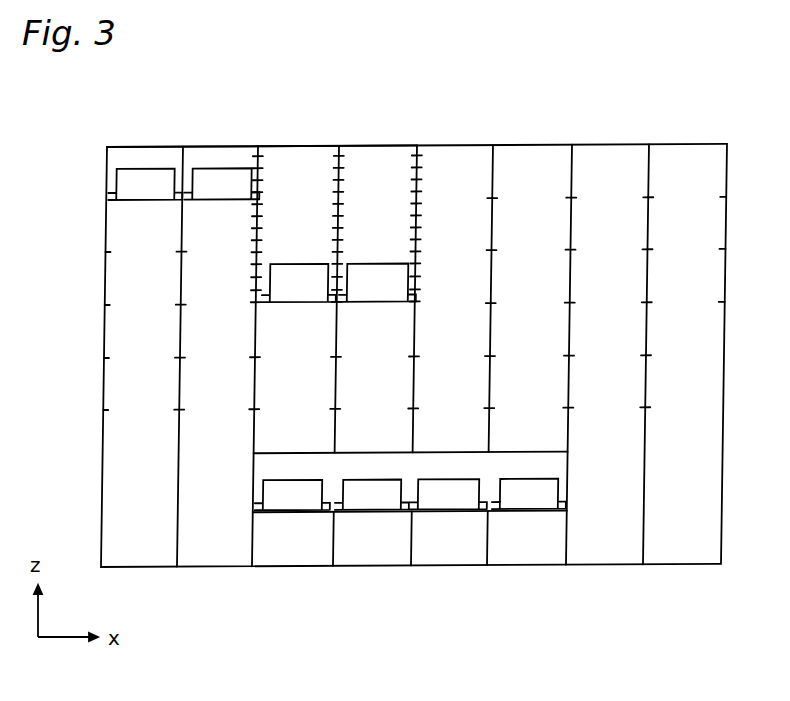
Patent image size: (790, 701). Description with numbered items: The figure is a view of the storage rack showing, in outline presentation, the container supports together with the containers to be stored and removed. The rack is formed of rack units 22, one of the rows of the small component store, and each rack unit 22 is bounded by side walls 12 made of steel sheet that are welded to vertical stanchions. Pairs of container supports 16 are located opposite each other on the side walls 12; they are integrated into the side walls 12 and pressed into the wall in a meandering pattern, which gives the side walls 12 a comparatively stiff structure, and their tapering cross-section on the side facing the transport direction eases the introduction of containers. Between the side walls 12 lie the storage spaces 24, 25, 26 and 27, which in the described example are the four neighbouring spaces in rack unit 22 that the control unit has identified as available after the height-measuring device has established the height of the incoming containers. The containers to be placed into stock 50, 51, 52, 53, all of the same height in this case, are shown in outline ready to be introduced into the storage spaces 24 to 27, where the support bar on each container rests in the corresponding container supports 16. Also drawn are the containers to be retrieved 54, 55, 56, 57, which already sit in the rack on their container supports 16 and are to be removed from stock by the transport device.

The side wall 12 is at (493, 172).
The container support 16 is at (408, 168).
The rack unit 22 is at (172, 157).
The storage space 24 is at (144, 194).
The storage space 25 is at (220, 193).
The storage space 26 is at (298, 193).
The storage space 27 is at (377, 191).
The container to be placed into stock 50 is at (292, 495).
The container to be placed into stock 51 is at (372, 494).
The container to be placed into stock 52 is at (448, 494).
The container to be placed into stock 53 is at (529, 494).
The container to be retrieved 54 is at (145, 184).
The container to be retrieved 55 is at (221, 183).
The container to be retrieved 56 is at (299, 283).
The container to be retrieved 57 is at (378, 282).